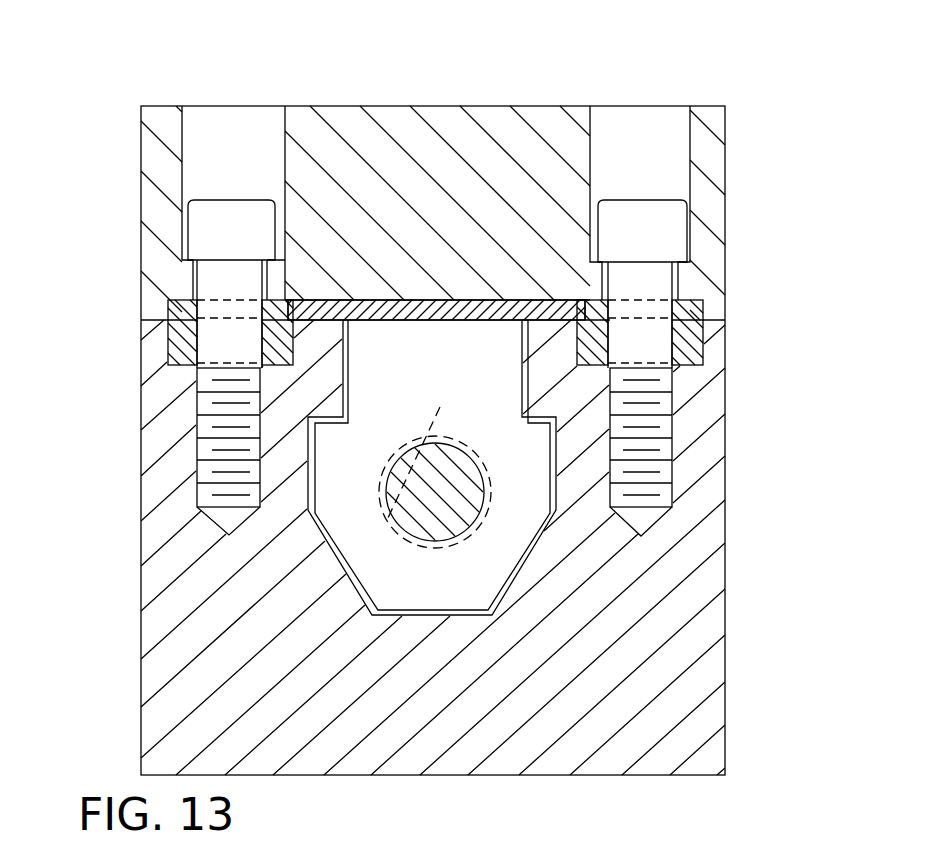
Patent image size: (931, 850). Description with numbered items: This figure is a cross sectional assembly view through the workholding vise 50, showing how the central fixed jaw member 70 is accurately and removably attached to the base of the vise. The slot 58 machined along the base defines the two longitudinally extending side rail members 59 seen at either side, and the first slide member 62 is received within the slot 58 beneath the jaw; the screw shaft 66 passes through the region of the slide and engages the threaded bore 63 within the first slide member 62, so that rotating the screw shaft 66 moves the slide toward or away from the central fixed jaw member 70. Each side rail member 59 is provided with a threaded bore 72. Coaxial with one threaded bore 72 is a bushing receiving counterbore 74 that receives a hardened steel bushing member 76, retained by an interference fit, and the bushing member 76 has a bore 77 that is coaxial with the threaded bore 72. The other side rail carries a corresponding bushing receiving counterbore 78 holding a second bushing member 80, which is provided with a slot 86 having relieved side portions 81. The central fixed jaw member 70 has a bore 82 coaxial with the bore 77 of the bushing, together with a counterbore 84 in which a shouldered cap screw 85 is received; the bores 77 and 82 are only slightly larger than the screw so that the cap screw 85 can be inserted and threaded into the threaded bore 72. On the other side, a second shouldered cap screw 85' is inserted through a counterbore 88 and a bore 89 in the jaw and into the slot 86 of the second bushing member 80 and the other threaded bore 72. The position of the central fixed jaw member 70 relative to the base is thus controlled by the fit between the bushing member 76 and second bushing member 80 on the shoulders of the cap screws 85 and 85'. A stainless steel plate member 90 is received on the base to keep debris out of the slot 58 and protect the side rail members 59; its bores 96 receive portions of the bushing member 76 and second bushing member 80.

The workholding vise 50 is at (749, 606).
The slot 58 is at (752, 736).
The side rail member 59 is at (168, 432).
The first slide member 62 is at (418, 592).
The threaded bore 63 is at (432, 456).
The screw shaft 66 is at (450, 495).
The central fixed jaw member 70 is at (443, 130).
The threaded bore 72 is at (197, 498).
The bushing receiving counterbore 74 is at (170, 352).
The bushing member 76 is at (183, 360).
The bore 77 is at (182, 303).
The bushing receiving counterbore 78 is at (674, 367).
The second bushing member 80 is at (684, 362).
The relieved side portions 81 is at (620, 303).
The bore 82 is at (183, 264).
The counterbore 84 is at (182, 181).
The shouldered cap screw 85 is at (209, 214).
The shouldered cap screw 85' is at (660, 211).
The slot 86 is at (674, 367).
The counterbore 88 is at (690, 170).
The bore 89 is at (677, 293).
The plate member 90 is at (350, 303).
The bores 96 is at (290, 312).